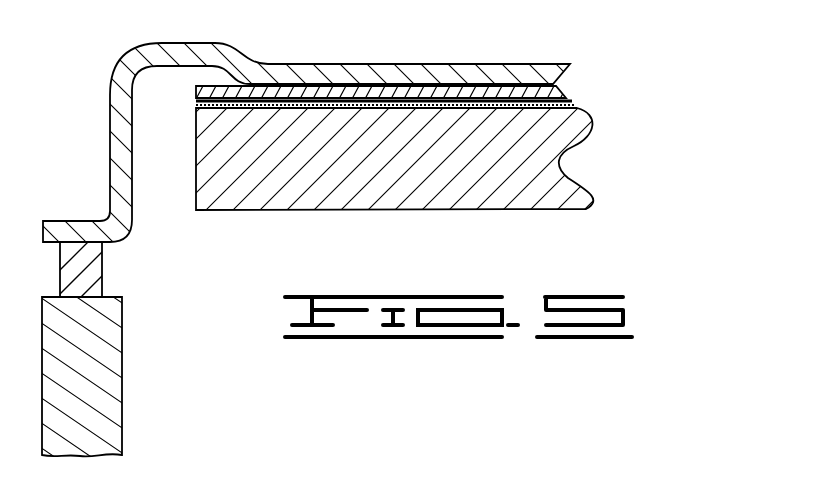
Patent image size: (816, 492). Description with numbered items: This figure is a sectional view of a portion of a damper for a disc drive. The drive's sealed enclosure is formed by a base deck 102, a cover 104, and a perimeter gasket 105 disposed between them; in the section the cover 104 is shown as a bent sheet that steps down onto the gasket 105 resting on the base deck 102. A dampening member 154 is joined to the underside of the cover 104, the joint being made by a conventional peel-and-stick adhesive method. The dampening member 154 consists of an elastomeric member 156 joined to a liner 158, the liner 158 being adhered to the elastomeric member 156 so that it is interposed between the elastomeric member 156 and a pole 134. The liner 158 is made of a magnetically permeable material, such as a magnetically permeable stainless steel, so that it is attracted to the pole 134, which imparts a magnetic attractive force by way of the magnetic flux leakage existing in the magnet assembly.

The base deck 102 is at (122, 358).
The cover 104 is at (281, 64).
The perimeter gasket 105 is at (102, 259).
The pole 134 is at (487, 189).
The dampening member 154 is at (445, 84).
The elastomeric member 156 is at (556, 87).
The liner 158 is at (517, 106).